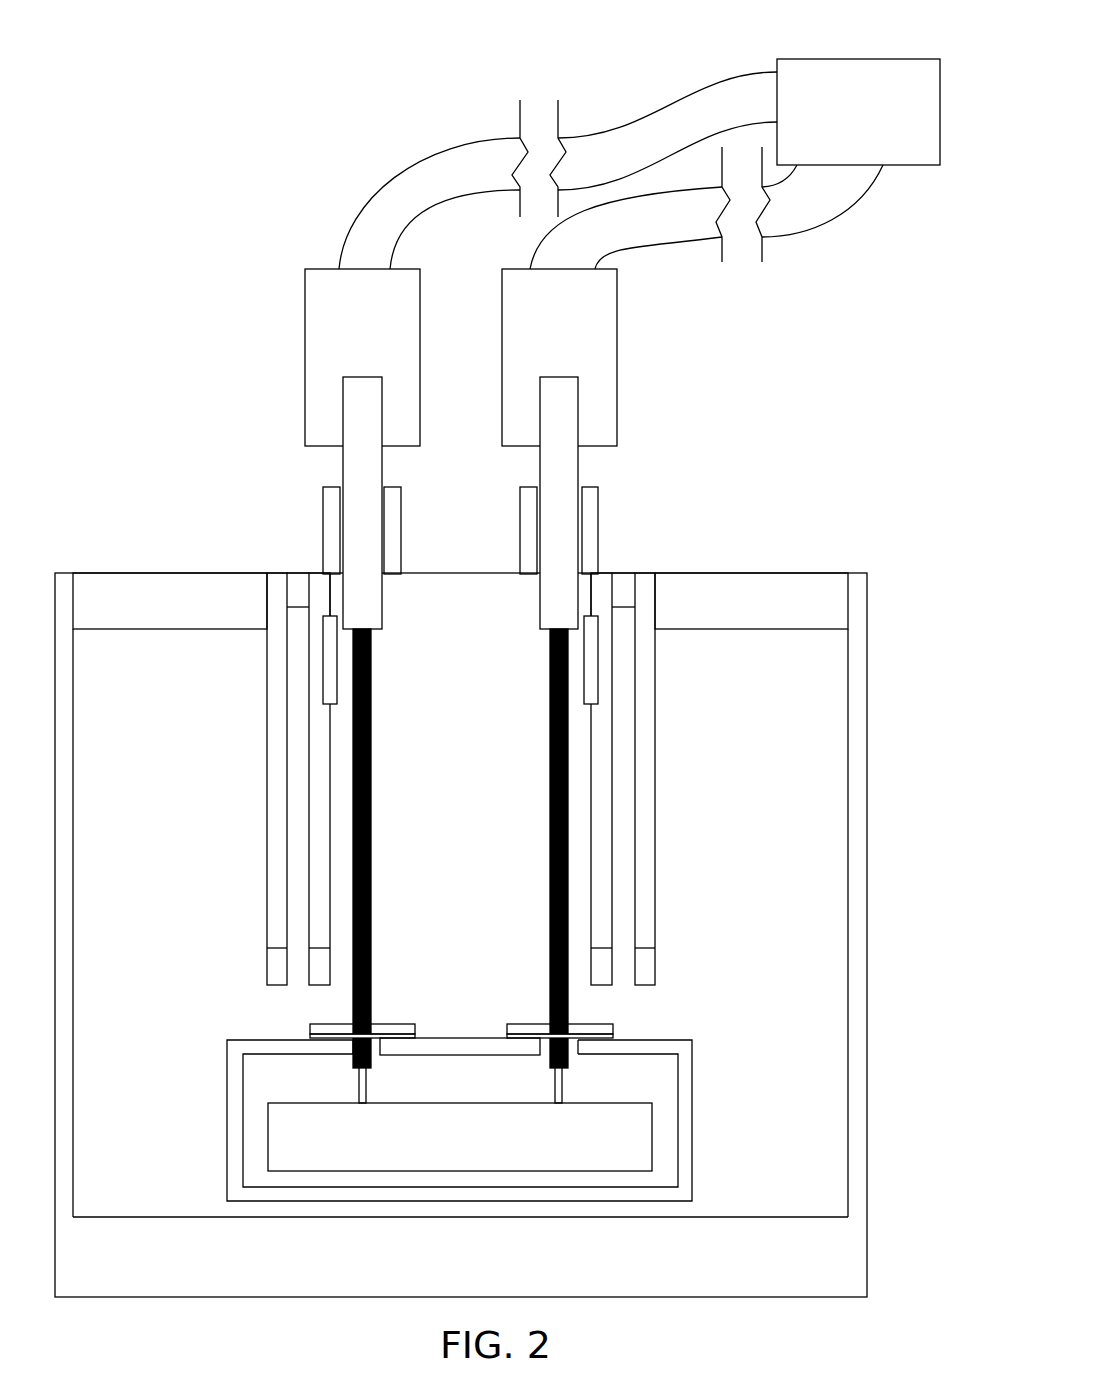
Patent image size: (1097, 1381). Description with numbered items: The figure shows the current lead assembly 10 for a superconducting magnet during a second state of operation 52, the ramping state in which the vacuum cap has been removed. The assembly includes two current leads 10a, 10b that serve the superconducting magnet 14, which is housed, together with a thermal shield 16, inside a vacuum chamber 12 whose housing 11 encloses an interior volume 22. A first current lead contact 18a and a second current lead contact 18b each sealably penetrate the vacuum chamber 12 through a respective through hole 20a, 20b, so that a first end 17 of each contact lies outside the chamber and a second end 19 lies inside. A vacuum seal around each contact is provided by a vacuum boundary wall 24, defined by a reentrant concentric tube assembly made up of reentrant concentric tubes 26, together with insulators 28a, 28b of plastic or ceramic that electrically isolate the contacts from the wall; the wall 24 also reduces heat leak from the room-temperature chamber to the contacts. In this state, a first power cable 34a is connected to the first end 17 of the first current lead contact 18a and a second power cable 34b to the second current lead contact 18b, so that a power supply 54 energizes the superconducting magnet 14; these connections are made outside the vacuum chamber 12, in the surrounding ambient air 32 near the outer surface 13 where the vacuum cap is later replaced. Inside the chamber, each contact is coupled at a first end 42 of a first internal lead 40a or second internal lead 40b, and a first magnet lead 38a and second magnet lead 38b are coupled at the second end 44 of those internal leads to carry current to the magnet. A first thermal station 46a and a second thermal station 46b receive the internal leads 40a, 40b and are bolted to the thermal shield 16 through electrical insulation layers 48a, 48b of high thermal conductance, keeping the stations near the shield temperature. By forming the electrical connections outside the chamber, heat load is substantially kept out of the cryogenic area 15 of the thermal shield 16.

The current lead assembly 10 is at (392, 86).
The current lead 10a is at (283, 499).
The current lead 10b is at (676, 478).
The housing 11 is at (868, 736).
The vacuum chamber 12 is at (822, 573).
The outer surface 13 is at (100, 573).
The superconducting magnet 14 is at (491, 1155).
The cryogenic area 15 is at (491, 1088).
The thermal shield 16 is at (228, 1150).
The first end 17 is at (343, 397).
The first current lead contact 18a is at (383, 470).
The second current lead contact 18b is at (580, 470).
The second end 19 is at (542, 630).
The through hole 20a is at (310, 559).
The through hole 20b is at (609, 565).
The interior volume 22 is at (784, 693).
The vacuum boundary wall 24 is at (655, 858).
The reentrant concentric tubes 26 is at (268, 873).
The insulator 28a is at (401, 540).
The insulator 28b is at (521, 505).
The ambient air 32 is at (601, 154).
The first power cable 34a is at (345, 239).
The second power cable 34b is at (650, 246).
The first magnet lead 38a is at (358, 1086).
The second magnet lead 38b is at (565, 1085).
The first internal lead 40a is at (355, 1000).
The second internal lead 40b is at (550, 1000).
The first end 42 is at (372, 690).
The second end 44 is at (580, 1060).
The first thermal station 46a is at (330, 1024).
The second thermal station 46b is at (612, 1024).
The electrical insulation layer 48a is at (310, 1030).
The electrical insulation layer 48b is at (613, 1034).
The second state of operation 52 is at (866, 321).
The power supply 54 is at (860, 59).